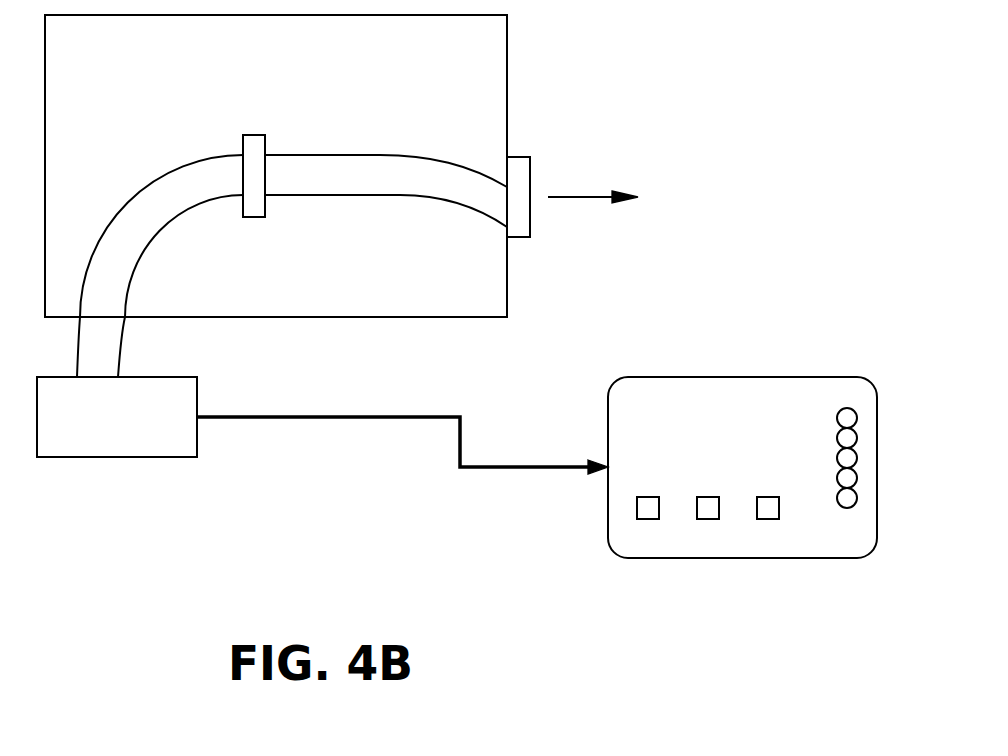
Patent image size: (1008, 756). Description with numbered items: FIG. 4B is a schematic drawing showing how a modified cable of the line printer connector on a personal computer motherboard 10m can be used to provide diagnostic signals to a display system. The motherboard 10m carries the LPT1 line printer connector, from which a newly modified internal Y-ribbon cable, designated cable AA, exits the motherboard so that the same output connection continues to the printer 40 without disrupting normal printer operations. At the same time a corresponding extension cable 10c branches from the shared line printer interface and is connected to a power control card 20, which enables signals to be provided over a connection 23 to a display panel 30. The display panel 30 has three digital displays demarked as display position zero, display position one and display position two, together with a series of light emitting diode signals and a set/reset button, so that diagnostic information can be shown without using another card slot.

The PC motherboard 10m is at (507, 80).
The extension cable 10c is at (187, 172).
The power control card 20 is at (197, 398).
The connection line 23 is at (505, 472).
The display panel 30 is at (748, 377).
The printer 40 is at (725, 197).